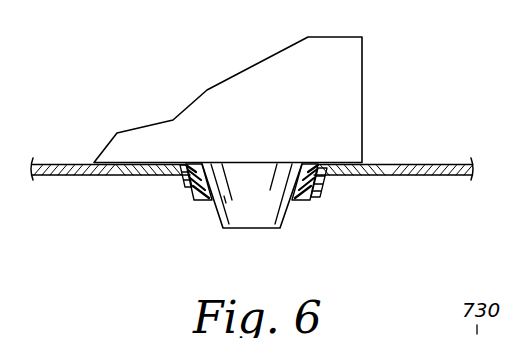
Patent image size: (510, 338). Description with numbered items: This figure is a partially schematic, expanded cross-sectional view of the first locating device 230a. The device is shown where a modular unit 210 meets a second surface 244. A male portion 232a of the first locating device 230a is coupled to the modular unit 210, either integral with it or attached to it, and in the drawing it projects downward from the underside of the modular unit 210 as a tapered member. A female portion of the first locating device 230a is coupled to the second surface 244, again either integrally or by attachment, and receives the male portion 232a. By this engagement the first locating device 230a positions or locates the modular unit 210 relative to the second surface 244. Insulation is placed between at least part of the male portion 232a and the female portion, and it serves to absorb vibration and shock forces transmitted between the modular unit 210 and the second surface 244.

The modular unit 210 is at (315, 53).
The first locating device 230a is at (293, 128).
The male portion 232a is at (238, 175).
The second surface 244 is at (425, 163).